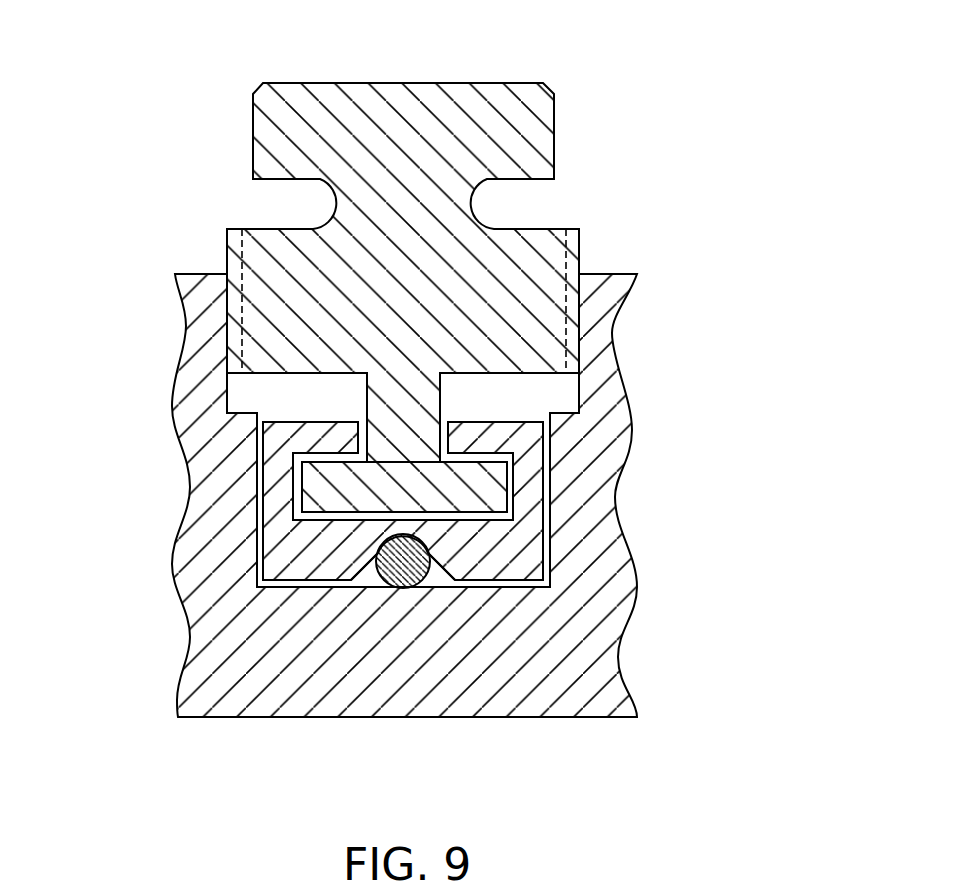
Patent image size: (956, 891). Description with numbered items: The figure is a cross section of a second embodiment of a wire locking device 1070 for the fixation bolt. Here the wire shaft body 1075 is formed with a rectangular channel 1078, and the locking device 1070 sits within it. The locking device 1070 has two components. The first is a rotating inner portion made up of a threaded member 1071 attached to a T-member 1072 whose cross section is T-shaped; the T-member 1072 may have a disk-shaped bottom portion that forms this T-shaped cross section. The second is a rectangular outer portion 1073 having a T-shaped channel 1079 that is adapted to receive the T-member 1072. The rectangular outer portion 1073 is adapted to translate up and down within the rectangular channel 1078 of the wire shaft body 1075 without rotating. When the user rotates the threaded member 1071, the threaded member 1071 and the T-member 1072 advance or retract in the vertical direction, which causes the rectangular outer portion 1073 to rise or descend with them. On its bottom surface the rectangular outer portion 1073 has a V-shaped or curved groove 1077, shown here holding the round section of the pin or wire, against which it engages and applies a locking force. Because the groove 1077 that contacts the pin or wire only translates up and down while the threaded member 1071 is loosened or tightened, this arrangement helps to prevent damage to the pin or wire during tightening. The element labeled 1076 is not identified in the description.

The locking device 1070 is at (514, 80).
The threaded member 1071 is at (581, 252).
The T-member 1072 is at (507, 497).
The rectangular outer portion 1073 is at (547, 451).
The wire shaft body 1075 is at (602, 367).
The O-ring seal 1076 is at (427, 573).
The groove 1077 is at (365, 567).
The rectangular channel 1078 is at (266, 473).
The T-shaped channel 1079 is at (268, 575).